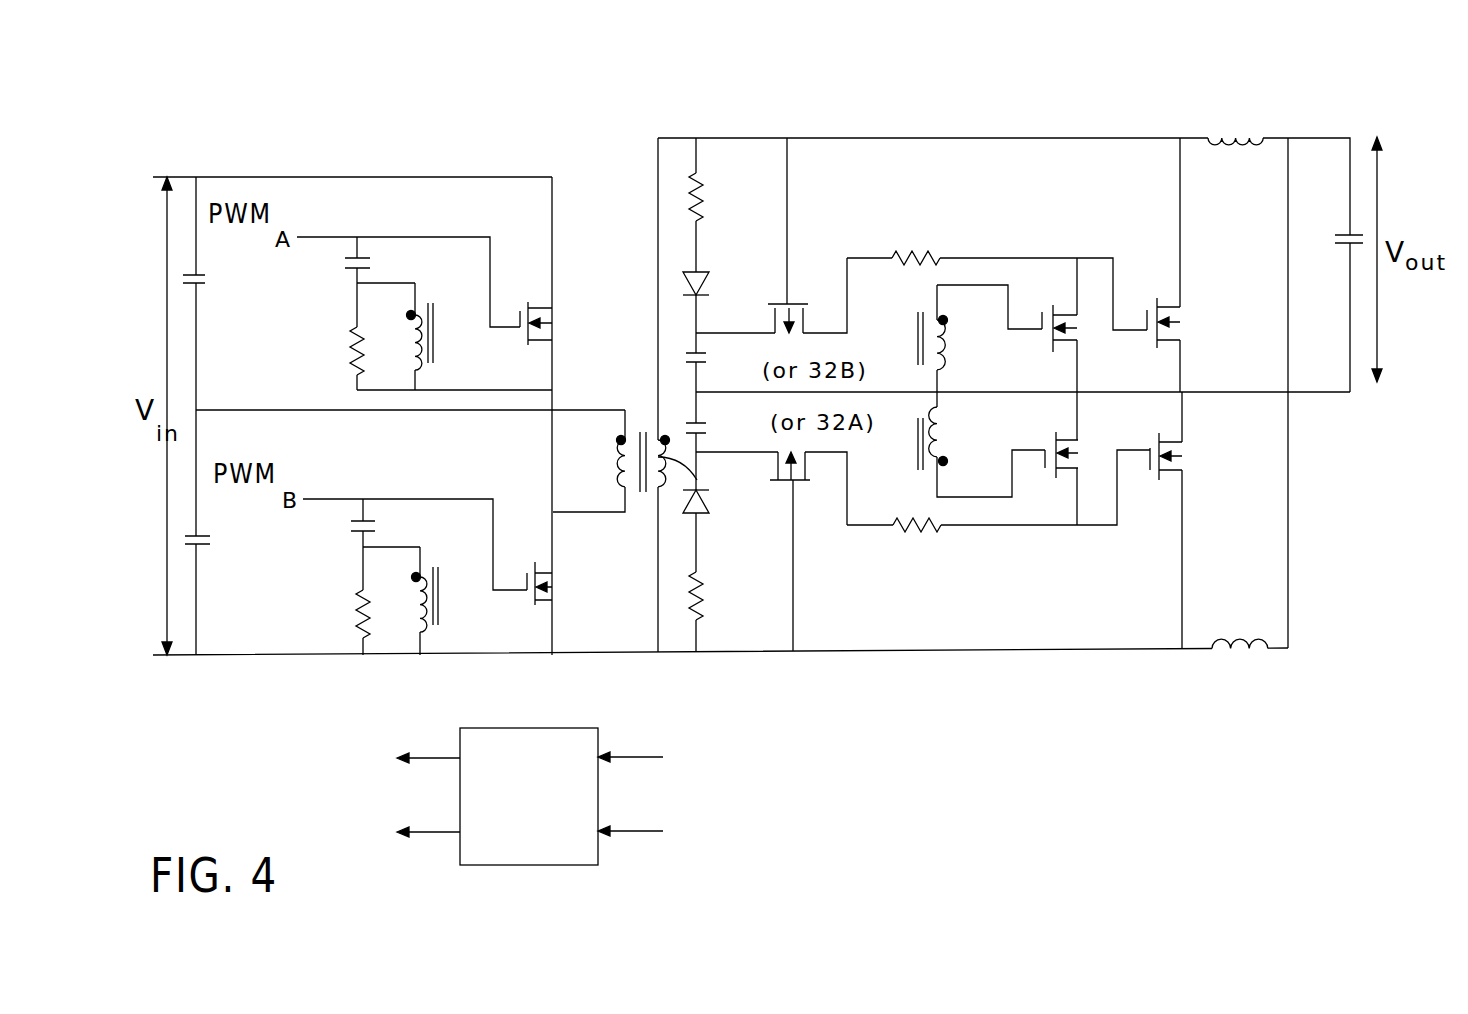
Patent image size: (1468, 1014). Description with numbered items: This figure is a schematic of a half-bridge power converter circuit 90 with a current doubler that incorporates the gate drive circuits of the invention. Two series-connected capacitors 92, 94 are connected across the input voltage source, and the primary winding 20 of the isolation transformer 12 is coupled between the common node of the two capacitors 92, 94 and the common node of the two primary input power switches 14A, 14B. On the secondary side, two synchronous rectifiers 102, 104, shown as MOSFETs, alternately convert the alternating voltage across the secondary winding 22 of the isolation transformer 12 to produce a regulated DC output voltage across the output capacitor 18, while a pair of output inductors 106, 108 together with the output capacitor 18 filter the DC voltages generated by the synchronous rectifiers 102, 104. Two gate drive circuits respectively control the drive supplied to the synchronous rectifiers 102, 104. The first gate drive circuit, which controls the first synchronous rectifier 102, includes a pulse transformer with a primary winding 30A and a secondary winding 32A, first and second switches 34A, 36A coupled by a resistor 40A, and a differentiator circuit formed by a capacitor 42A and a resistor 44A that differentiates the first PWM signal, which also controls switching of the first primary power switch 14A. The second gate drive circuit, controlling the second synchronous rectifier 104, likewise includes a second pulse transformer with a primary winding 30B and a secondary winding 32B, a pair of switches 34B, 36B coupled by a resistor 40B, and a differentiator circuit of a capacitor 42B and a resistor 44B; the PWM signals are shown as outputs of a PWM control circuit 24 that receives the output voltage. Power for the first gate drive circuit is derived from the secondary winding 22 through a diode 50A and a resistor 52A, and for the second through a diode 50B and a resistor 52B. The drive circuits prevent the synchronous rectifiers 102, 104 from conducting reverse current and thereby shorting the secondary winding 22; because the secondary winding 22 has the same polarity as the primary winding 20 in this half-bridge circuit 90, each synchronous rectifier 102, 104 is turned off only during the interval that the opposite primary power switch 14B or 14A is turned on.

The half-bridge power converter circuit 90 is at (1061, 69).
The capacitor 92 is at (207, 282).
The capacitor 94 is at (212, 544).
The capacitor 42A is at (372, 262).
The capacitor 42B is at (377, 527).
The resistor 44A is at (353, 358).
The resistor 44B is at (360, 621).
The primary winding 30A is at (436, 333).
The primary winding 30B is at (441, 597).
The primary input power switch 14A is at (557, 324).
The primary input power switch 14B is at (557, 590).
The isolation transformer 12 is at (618, 422).
The primary winding 20 is at (625, 464).
The secondary winding 22 is at (700, 478).
The resistor 52A is at (702, 202).
The resistor 52B is at (708, 592).
The diode 50A is at (710, 279).
The diode 50B is at (710, 513).
The second switch 36A is at (806, 296).
The switch 36B is at (801, 491).
The resistor 40A is at (915, 250).
The resistor 40B is at (930, 532).
The secondary winding 32A is at (917, 360).
The secondary winding 32B is at (900, 446).
The first switch 34A is at (1043, 342).
The switch 34B is at (1085, 448).
The synchronous rectifier 102 is at (1184, 317).
The synchronous rectifier 104 is at (1185, 457).
The output inductor 106 is at (1238, 130).
The output inductor 108 is at (1230, 650).
The output capacitor 18 is at (1350, 232).
The PWM control circuit 24 is at (538, 730).